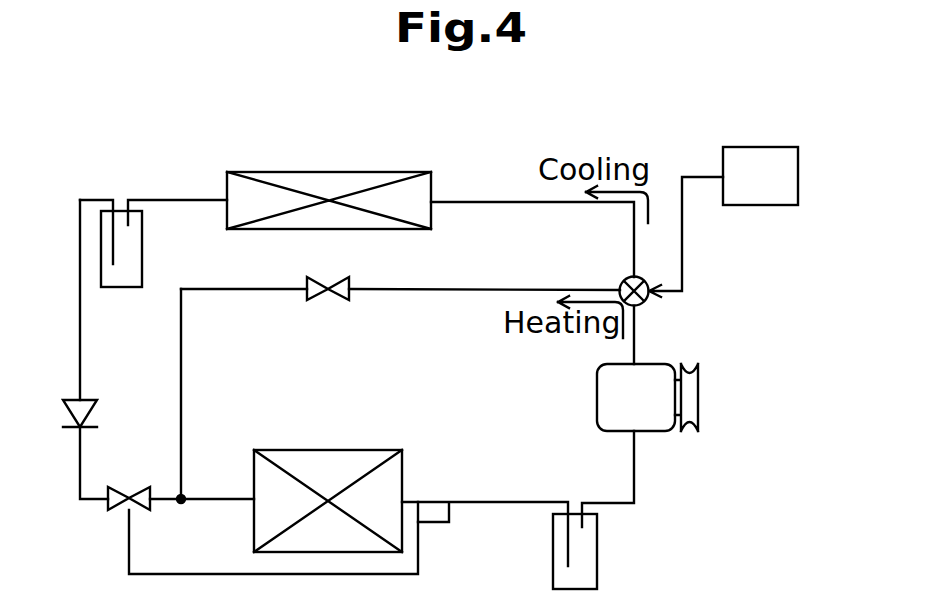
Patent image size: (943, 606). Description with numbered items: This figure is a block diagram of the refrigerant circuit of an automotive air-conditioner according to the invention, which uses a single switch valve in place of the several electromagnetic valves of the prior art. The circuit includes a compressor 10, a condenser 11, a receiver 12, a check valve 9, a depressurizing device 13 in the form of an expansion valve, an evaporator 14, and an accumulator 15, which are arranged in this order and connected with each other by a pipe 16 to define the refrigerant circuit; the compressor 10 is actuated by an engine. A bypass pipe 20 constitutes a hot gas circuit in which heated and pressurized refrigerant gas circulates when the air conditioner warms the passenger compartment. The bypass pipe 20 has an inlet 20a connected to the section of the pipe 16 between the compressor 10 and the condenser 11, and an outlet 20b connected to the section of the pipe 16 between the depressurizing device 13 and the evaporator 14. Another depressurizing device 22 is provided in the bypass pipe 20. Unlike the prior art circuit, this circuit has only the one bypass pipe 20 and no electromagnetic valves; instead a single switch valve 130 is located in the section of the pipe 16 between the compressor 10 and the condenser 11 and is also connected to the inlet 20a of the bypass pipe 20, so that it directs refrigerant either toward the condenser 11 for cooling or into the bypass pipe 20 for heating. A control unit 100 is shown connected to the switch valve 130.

The check valve 9 is at (63, 413).
The compressor 10 is at (655, 422).
The condenser 11 is at (359, 182).
The receiver 12 is at (142, 255).
The depressurizing device 13 is at (133, 487).
The evaporator 14 is at (357, 460).
The accumulator 15 is at (597, 568).
The pipe 16 is at (494, 507).
The bypass pipe 20 is at (400, 290).
The inlet 20a is at (620, 283).
The outlet 20b is at (210, 478).
The depressurizing device 22 is at (338, 300).
The control unit 100 is at (780, 193).
The switch valve 130 is at (648, 303).